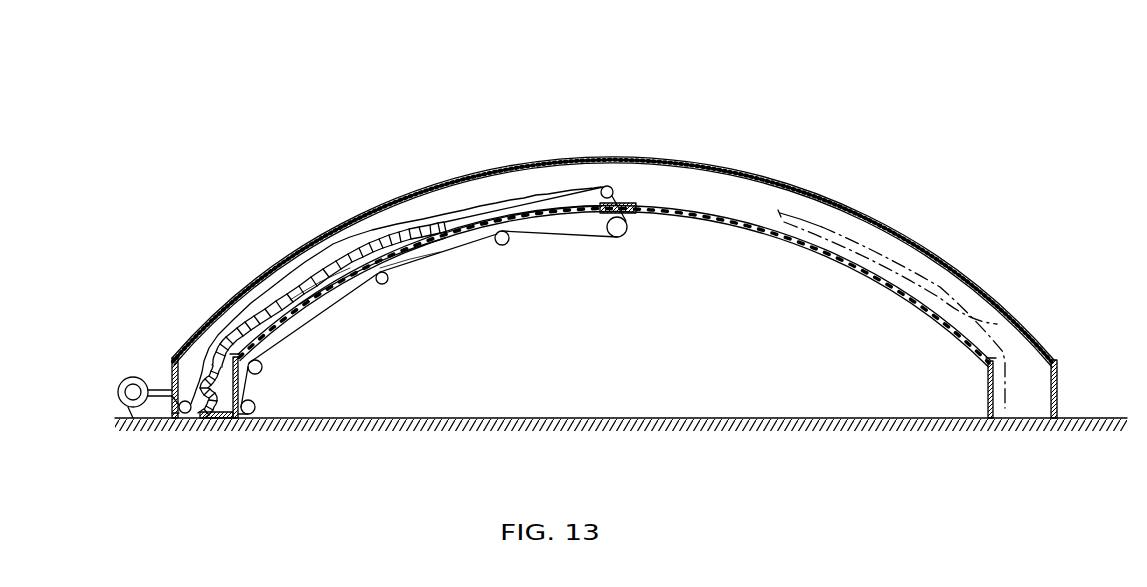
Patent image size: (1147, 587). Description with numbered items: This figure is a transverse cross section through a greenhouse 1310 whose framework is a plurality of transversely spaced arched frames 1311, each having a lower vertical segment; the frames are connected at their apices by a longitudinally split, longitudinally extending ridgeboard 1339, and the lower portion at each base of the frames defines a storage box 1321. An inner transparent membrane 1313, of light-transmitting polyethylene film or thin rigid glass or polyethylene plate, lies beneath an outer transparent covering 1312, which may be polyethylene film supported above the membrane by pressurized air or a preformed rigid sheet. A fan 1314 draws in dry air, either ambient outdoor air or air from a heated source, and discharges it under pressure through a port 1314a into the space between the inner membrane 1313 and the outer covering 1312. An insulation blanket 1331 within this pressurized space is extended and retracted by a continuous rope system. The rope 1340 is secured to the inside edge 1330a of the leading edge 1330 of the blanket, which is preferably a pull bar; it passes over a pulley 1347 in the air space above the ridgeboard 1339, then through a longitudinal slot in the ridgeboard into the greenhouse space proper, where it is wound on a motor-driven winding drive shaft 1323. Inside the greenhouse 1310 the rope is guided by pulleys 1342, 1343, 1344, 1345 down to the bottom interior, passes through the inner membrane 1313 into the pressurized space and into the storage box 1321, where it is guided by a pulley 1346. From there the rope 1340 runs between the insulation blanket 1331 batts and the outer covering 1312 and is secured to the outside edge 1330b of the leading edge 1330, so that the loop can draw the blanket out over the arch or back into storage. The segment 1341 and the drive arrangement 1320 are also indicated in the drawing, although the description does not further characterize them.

The greenhouse 1310 is at (455, 118).
The outer transparent covering 1312 is at (350, 218).
The storage box 1321 is at (173, 355).
The fan 1314 is at (129, 377).
The port 1314a is at (184, 413).
The rope 1340 is at (240, 317).
The cable segment 1341 is at (578, 194).
The pulley 1347 is at (607, 185).
The winding drive shaft 1323 is at (627, 229).
The pulley 1342 is at (508, 243).
The pulley 1343 is at (388, 283).
The pulley 1344 is at (262, 367).
The pulley 1345 is at (255, 407).
The insulation blanket 1331 is at (297, 278).
The pulley 1346 is at (200, 419).
The leading edge 1330 is at (441, 219).
The inside edge 1330a is at (450, 221).
The outside edge 1330b is at (444, 212).
The ridgeboard 1339 is at (631, 204).
The arched frames 1311 is at (411, 256).
The inner transparent membrane 1313 is at (336, 268).
The drive assembly 1320 is at (304, 303).